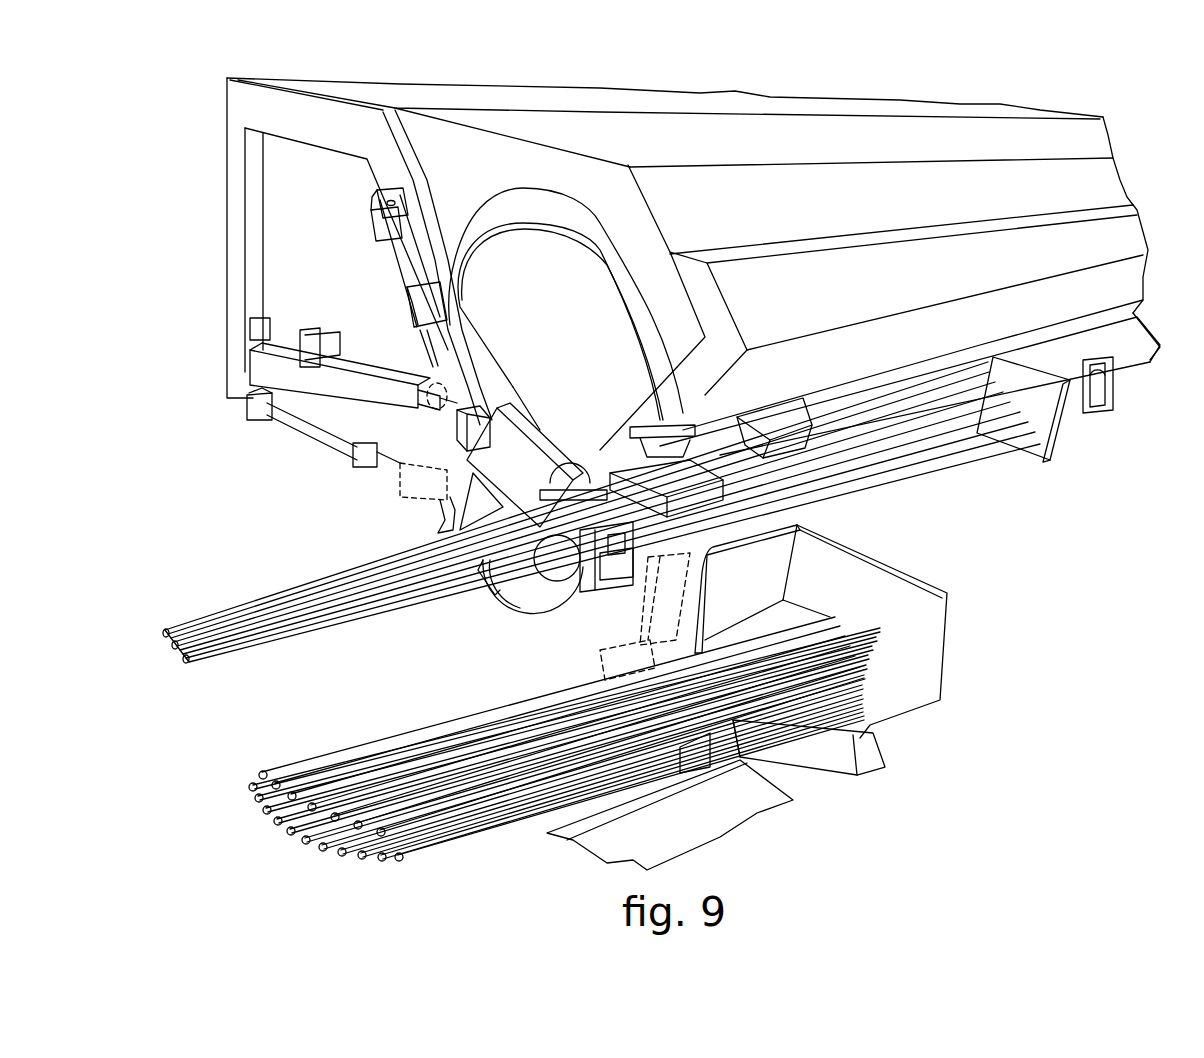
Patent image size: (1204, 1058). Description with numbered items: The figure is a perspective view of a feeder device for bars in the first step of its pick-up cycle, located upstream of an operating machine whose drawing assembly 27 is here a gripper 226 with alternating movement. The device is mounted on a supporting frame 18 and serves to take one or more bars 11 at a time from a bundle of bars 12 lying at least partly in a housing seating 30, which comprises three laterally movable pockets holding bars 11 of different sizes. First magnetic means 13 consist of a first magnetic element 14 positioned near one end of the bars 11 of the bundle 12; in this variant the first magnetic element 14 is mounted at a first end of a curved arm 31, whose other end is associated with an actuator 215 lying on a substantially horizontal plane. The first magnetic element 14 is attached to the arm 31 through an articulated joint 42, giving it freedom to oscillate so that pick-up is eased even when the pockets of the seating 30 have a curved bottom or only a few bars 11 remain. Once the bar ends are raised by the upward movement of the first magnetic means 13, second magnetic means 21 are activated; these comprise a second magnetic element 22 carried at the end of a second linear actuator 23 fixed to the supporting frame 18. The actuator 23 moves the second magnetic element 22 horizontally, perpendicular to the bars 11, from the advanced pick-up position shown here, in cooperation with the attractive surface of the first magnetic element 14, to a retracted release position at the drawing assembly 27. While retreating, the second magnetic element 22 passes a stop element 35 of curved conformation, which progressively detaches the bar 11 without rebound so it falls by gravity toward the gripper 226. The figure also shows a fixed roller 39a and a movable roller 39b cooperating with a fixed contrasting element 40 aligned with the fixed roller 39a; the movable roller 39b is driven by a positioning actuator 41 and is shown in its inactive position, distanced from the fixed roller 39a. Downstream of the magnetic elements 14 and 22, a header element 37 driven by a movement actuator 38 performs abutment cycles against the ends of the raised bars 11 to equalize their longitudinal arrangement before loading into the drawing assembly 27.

The supporting frame 18 is at (1018, 135).
The curved arm 31 is at (505, 205).
The positioning actuator 41 is at (405, 258).
The articulated joint 42 is at (657, 447).
The first magnetic means 13 is at (710, 445).
The second magnetic element 22 is at (593, 485).
The movable roller 39b is at (562, 465).
The fixed roller 39a is at (532, 577).
The contrasting element 40 is at (620, 538).
The first magnetic element 14 is at (697, 502).
The gripper 226 is at (785, 418).
The drawing assembly 27 is at (836, 417).
The header element 37 is at (1032, 440).
The movement actuator 38 is at (1083, 383).
The stop element 35 is at (438, 527).
The second magnetic means 21 is at (470, 534).
The second linear actuator 23 is at (347, 410).
The actuator 215 is at (270, 418).
The bars 11 is at (218, 648).
The bundle of bars 12 is at (384, 765).
The housing seating 30 is at (913, 700).